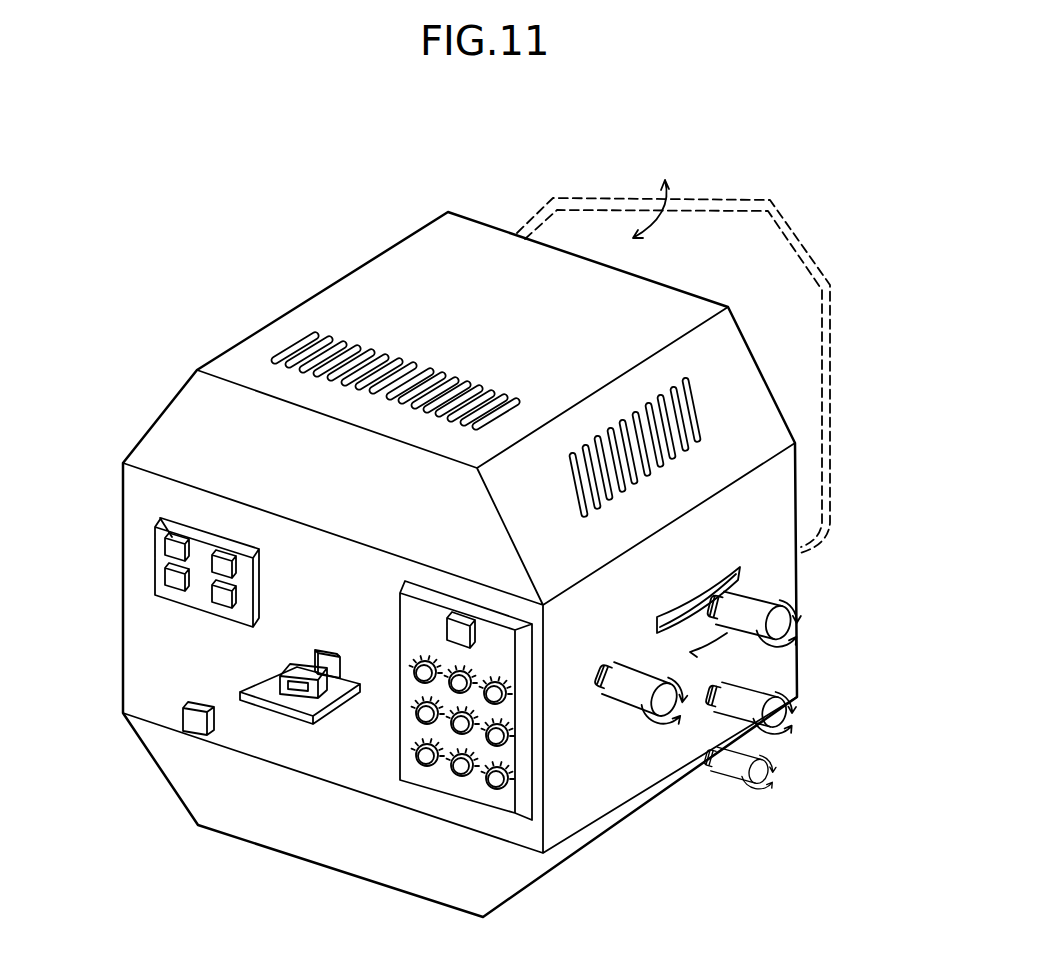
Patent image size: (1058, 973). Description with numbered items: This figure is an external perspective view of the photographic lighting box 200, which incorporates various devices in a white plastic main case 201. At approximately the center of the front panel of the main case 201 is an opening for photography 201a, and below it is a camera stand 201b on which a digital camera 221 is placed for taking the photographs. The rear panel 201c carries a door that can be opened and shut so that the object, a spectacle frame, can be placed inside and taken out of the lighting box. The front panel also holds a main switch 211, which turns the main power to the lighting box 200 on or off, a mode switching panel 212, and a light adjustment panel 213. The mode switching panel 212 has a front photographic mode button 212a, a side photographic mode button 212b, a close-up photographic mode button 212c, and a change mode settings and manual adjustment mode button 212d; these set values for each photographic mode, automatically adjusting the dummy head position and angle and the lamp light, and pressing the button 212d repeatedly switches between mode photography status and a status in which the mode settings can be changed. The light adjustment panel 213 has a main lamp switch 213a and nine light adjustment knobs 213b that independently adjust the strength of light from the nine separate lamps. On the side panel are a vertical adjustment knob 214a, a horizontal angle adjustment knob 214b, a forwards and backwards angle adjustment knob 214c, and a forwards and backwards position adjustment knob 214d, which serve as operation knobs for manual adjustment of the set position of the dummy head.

The photographic lighting box 200 is at (474, 539).
The main case 201 is at (750, 537).
The opening for photography 201a is at (328, 649).
The camera stand 201b is at (285, 710).
The rear panel 201c is at (720, 205).
The main switch 211 is at (182, 725).
The mode switching panel 212 is at (174, 578).
The front photographic mode button 212a is at (160, 518).
The side photographic mode button 212b is at (222, 548).
The close-up photographic mode button 212c is at (180, 578).
The change mode settings and manual adjustment mode button 212d is at (222, 593).
The light adjustment panel 213 is at (411, 753).
The main lamp switch 213a is at (405, 618).
The light adjustment knobs 213b is at (415, 762).
The vertical adjustment knob 214a is at (780, 718).
The horizontal angle adjustment knob 214b is at (637, 693).
The forwards and backwards angle adjustment knob 214c is at (733, 780).
The forwards and backwards position adjustment knob 214d is at (750, 635).
The digital camera 221 is at (280, 676).